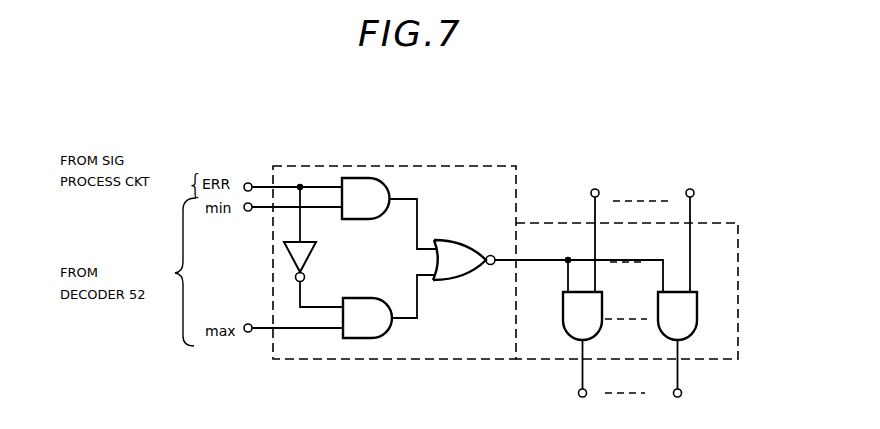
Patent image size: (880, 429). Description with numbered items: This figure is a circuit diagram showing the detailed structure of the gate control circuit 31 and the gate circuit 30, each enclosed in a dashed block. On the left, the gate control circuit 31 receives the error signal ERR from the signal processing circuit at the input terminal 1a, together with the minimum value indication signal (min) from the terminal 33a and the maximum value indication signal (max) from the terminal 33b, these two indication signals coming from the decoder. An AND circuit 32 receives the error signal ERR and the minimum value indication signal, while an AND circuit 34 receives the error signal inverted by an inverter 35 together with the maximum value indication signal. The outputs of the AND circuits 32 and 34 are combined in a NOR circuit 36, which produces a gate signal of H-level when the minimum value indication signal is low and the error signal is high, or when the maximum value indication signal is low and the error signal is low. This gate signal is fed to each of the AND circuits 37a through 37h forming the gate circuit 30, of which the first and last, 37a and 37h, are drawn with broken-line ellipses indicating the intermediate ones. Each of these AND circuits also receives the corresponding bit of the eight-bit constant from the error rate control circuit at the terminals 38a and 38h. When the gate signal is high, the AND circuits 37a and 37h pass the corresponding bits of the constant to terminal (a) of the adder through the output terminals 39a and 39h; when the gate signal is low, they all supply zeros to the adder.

The error signal input terminal from signal processing circuit 1a is at (247, 181).
The gate circuit 30 is at (741, 250).
The gate control circuit 31 is at (430, 165).
The AND circuit 32 is at (391, 190).
The terminal 33a is at (248, 212).
The max input terminal from decoder 33b is at (248, 323).
The AND circuit 34 is at (386, 336).
The inverter 35 is at (316, 257).
The NOR circuit 36 is at (450, 240).
The AND circuit 37a is at (565, 307).
The AND circuit 37h is at (660, 307).
The input terminal (channel a) 38a is at (595, 189).
The input terminal (channel h) 38h is at (690, 189).
The terminal 39a is at (578, 393).
The terminal 39h is at (682, 393).